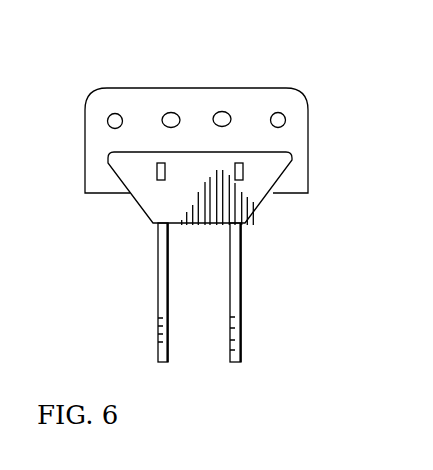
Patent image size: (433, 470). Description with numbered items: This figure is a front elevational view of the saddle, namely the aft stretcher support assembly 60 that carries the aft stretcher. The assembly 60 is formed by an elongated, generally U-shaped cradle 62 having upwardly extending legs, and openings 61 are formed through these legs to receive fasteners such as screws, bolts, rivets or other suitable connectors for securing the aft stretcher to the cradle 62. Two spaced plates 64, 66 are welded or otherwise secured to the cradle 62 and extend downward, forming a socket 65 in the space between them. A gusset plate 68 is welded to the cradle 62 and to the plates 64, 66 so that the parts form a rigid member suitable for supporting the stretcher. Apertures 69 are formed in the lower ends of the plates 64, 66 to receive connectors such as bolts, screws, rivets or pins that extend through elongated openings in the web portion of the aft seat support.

The aft stretcher support assembly 60 is at (207, 223).
The openings 61 is at (110, 119).
The cradle 62 is at (298, 138).
The plate 64 is at (157, 283).
The socket 65 is at (193, 313).
The plate 66 is at (235, 268).
The gusset plate 68 is at (160, 210).
The apertures 69 is at (157, 329).